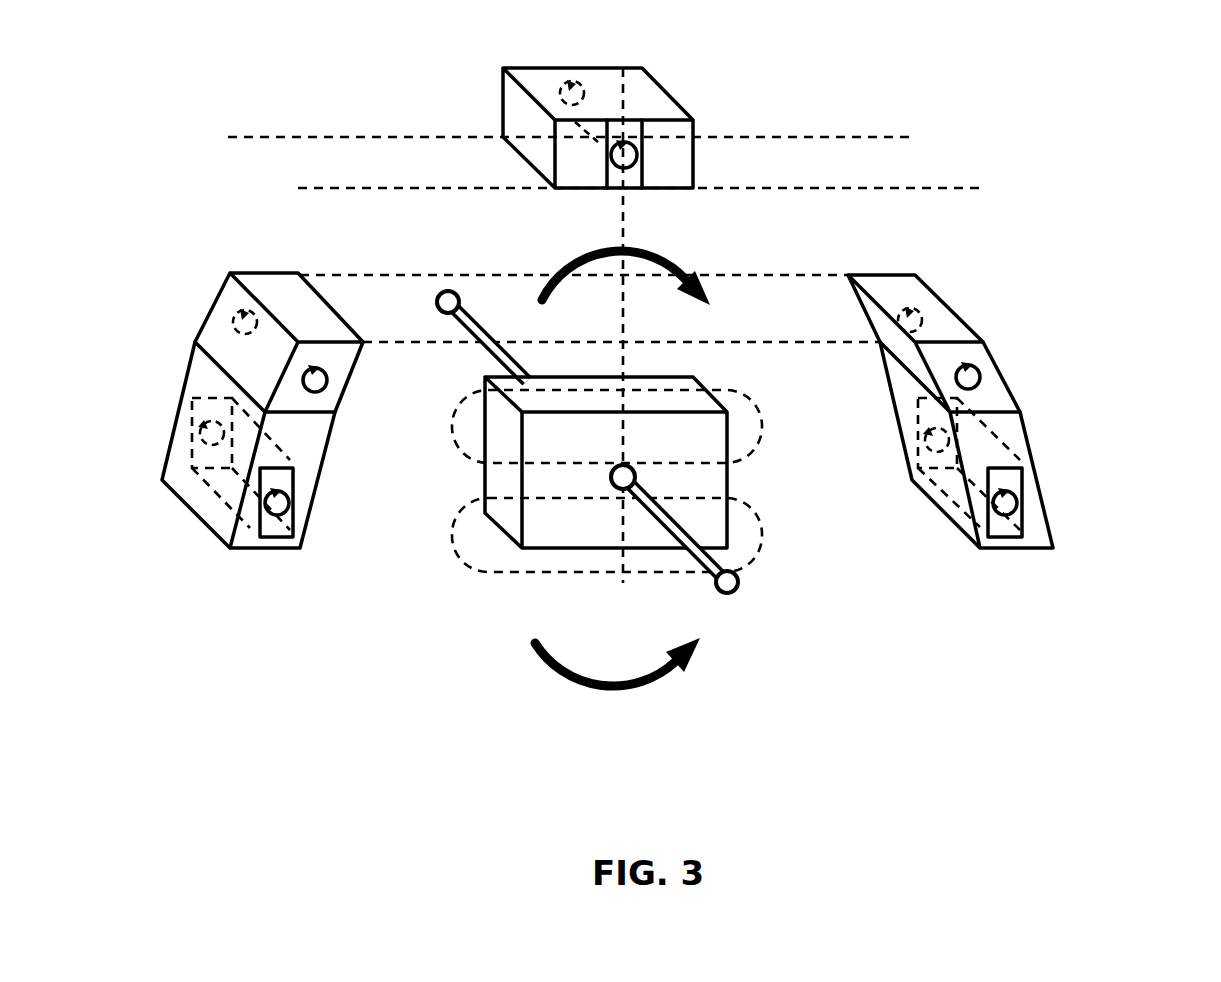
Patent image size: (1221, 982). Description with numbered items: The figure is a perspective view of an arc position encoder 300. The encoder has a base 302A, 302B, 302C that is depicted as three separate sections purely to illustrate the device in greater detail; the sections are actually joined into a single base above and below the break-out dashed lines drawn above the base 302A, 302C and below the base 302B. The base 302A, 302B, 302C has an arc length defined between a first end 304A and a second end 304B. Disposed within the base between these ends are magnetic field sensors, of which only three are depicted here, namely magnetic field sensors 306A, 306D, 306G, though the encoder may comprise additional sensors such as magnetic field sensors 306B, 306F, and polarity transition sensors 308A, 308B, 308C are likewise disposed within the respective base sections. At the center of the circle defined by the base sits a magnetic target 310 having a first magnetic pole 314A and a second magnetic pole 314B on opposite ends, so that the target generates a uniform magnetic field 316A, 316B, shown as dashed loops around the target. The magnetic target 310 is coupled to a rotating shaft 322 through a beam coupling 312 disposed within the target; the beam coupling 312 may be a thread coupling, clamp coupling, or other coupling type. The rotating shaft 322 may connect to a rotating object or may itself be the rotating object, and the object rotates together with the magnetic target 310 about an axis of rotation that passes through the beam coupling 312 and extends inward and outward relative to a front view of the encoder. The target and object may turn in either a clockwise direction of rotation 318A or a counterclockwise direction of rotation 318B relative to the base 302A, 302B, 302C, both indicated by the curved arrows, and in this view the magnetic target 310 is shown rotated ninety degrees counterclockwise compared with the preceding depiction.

The arc position encoder 300 is at (869, 150).
The base 302A is at (309, 401).
The base 302B is at (670, 117).
The base 302C is at (1015, 400).
The first end 304A is at (315, 532).
The second end 304B is at (1071, 543).
The magnetic field sensor 306A is at (360, 483).
The magnetic field sensor 306B is at (329, 367).
The magnetic field sensor 306D is at (724, 143).
The magnetic field sensor 306F is at (977, 368).
The magnetic field sensor 306G is at (1088, 483).
The polarity transition sensor 308A is at (295, 472).
The polarity transition sensor 308B is at (648, 145).
The polarity transition sensor 308C is at (1005, 488).
The magnetic target 310 is at (623, 388).
The beam coupling 312 is at (636, 460).
The first magnetic pole 314A is at (540, 460).
The second magnetic pole 314B is at (702, 480).
The uniform magnetic field 316A is at (771, 424).
The uniform magnetic field 316B is at (769, 536).
The clockwise direction of rotation 318A is at (625, 243).
The counterclockwise direction of rotation 318B is at (625, 661).
The rotating shaft 322 is at (745, 582).